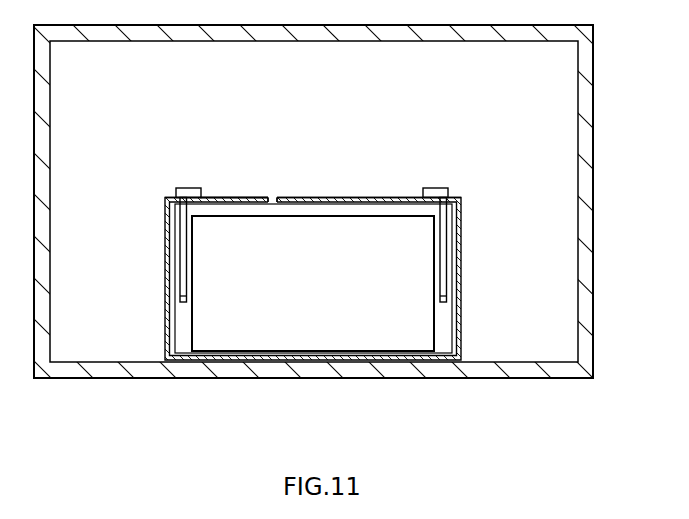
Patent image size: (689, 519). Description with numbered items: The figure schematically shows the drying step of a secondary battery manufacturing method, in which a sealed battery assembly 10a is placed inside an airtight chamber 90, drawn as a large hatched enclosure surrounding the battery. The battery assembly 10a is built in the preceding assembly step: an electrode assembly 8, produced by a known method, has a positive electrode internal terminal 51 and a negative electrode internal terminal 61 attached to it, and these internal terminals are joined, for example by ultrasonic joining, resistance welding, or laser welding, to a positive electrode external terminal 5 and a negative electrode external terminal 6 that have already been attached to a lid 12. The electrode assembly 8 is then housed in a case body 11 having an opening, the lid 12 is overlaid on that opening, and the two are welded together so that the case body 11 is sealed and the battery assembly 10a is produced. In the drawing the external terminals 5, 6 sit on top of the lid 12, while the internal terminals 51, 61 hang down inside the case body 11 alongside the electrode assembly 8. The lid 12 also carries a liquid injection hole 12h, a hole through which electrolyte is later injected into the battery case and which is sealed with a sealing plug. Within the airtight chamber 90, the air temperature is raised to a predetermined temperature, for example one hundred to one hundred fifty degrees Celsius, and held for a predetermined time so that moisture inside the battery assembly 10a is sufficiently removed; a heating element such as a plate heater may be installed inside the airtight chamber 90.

The airtight chamber 90 is at (594, 72).
The case body 11 is at (462, 323).
The lid 12 is at (348, 197).
The liquid injection hole 12h is at (278, 190).
The battery assembly 10a is at (229, 198).
The electrode assembly 8 is at (318, 322).
The positive electrode external terminal 5 is at (189, 188).
The negative electrode external terminal 6 is at (437, 188).
The positive electrode internal terminal 51 is at (181, 243).
The negative electrode internal terminal 61 is at (441, 243).